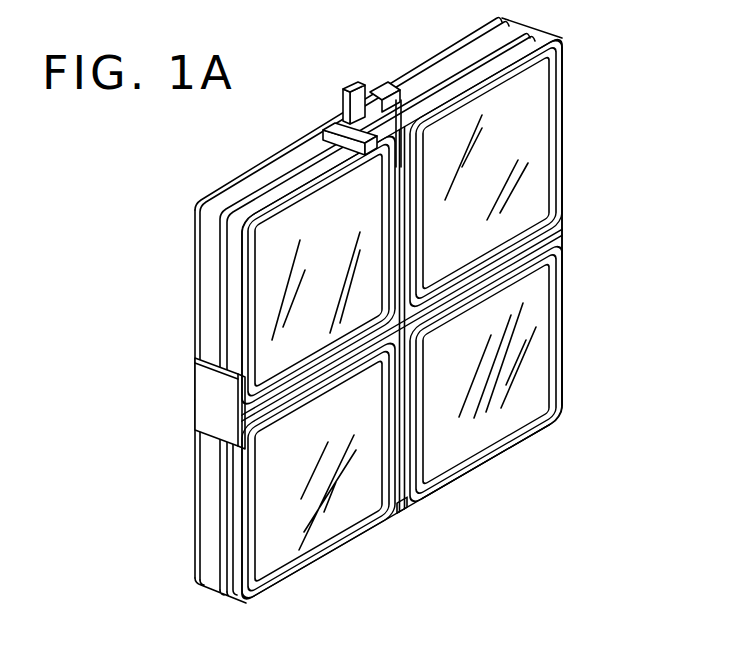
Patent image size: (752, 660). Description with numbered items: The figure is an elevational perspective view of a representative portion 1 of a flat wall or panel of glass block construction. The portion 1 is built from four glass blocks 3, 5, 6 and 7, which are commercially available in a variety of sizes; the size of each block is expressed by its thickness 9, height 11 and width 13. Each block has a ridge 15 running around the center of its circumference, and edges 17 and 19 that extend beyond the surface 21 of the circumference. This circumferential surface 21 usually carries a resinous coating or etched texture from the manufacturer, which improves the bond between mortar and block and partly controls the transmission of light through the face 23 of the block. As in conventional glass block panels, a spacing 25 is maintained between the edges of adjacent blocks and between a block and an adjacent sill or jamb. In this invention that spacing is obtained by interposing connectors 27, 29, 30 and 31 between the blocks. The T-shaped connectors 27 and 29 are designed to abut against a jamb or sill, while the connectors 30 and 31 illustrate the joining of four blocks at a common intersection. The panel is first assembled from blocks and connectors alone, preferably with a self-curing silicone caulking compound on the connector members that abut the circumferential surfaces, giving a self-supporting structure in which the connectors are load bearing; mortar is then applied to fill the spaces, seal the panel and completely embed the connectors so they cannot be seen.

The representative portion of a flat panel 1 is at (178, 230).
The glass block 3 is at (192, 265).
The glass block 5 is at (194, 500).
The glass block 6 is at (548, 176).
The glass block 7 is at (485, 467).
The thickness 9 is at (510, 40).
The height 11 is at (582, 228).
The width 13 is at (397, 530).
The ridge 15 is at (222, 595).
The edge 17 is at (282, 147).
The edge 19 is at (332, 196).
The surface of the circumference 21 is at (225, 207).
The face 23 is at (329, 306).
The spacing 25 is at (412, 518).
The T-shaped connector 27 is at (194, 392).
The T-shaped connector 29 is at (405, 470).
The connector 30 is at (436, 323).
The connector 31 is at (370, 80).